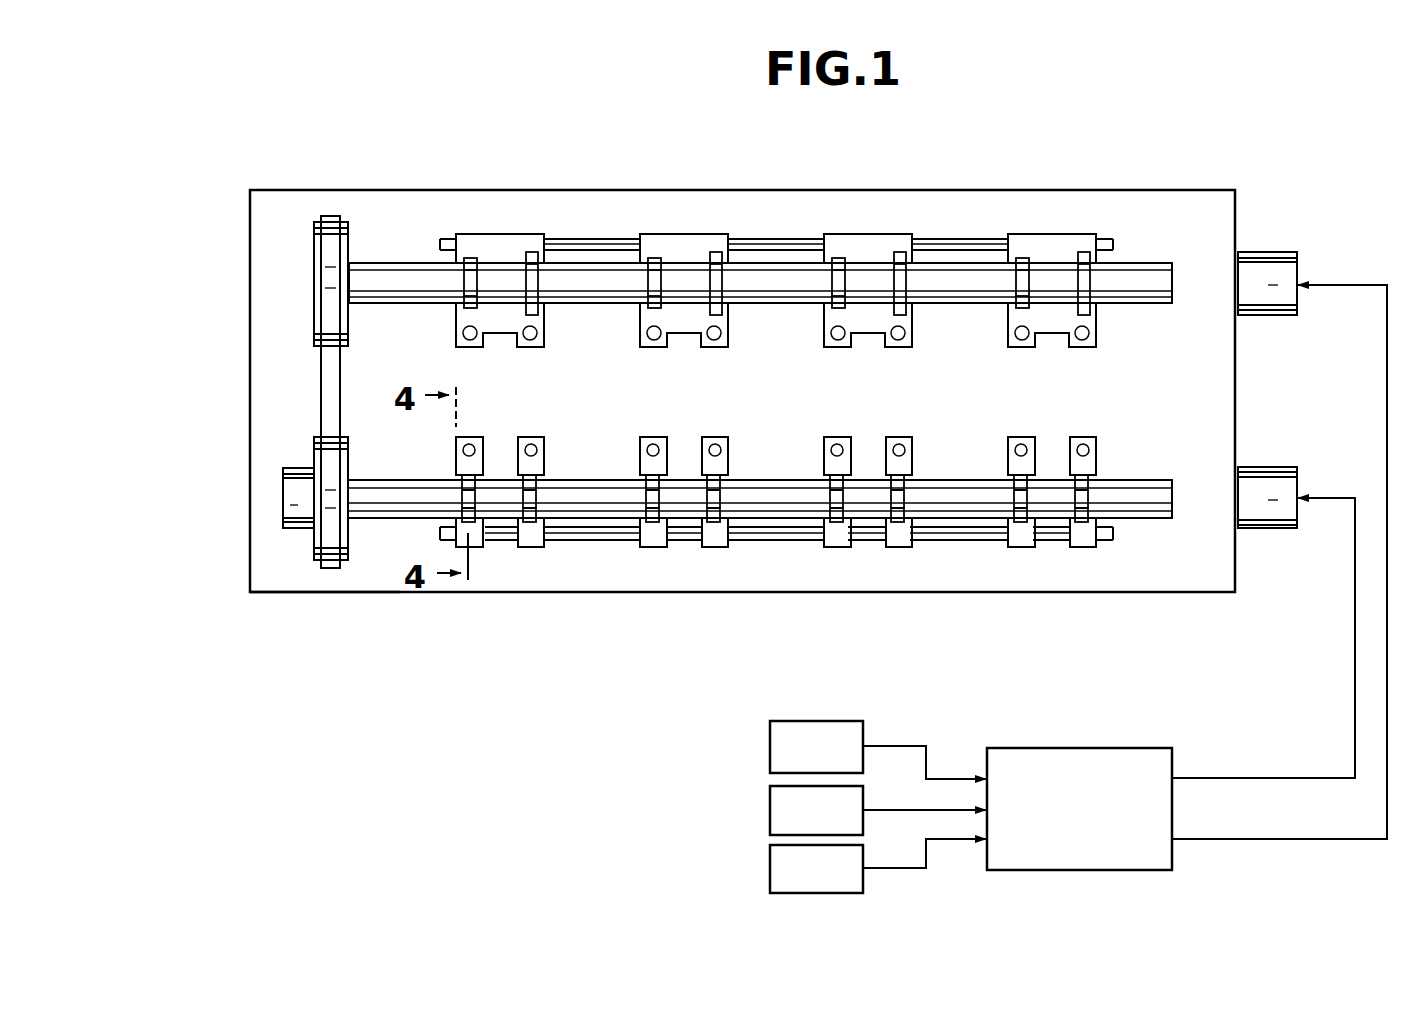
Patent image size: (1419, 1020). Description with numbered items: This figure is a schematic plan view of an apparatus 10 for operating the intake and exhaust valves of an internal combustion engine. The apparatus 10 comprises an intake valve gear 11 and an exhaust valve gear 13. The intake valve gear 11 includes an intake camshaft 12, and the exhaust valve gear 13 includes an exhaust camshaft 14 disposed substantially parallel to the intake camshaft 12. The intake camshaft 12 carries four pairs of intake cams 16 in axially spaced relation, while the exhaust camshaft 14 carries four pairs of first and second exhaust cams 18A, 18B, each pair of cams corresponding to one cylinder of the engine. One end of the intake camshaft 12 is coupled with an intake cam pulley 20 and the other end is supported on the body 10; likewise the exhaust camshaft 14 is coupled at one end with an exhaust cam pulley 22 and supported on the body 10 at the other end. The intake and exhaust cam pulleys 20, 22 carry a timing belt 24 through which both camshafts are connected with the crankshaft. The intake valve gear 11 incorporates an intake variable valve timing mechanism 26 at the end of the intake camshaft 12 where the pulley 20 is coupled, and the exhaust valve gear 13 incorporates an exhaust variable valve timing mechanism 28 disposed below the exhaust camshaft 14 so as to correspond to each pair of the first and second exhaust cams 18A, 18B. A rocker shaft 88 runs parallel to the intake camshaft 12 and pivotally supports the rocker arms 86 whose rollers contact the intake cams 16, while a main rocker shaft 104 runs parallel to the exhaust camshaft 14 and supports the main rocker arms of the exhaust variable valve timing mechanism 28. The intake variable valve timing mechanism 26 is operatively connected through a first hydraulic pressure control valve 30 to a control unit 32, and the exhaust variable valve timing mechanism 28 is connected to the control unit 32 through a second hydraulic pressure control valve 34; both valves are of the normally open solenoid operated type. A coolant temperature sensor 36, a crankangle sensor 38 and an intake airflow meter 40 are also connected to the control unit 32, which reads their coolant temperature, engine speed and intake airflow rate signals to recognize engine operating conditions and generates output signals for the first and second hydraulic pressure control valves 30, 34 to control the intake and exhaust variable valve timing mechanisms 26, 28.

The apparatus 10 is at (247, 302).
The intake valve gear 11 is at (283, 550).
The intake camshaft 12 is at (1155, 480).
The exhaust valve gear 13 is at (310, 243).
The exhaust camshaft 14 is at (1162, 262).
The intake cams 16 is at (462, 500).
The first exhaust cam 18A is at (468, 262).
The second exhaust cam 18B is at (530, 252).
The intake cam pulley 20 is at (350, 548).
The exhaust cam pulley 22 is at (352, 238).
The timing belt 24 is at (313, 388).
The intake variable valve timing mechanism 26 is at (283, 495).
The exhaust variable valve timing mechanism 28 is at (498, 234).
The first hydraulic pressure control valve 30 is at (1265, 466).
The control unit 32 is at (1052, 748).
The second hydraulic pressure control valve 34 is at (1265, 251).
The coolant temperature sensor 36 is at (770, 745).
The crankangle sensor 38 is at (770, 812).
The intake airflow meter 40 is at (770, 870).
The rocker arm 86 is at (470, 548).
The rocker shaft 88 is at (592, 541).
The main rocker shaft 104 is at (978, 240).